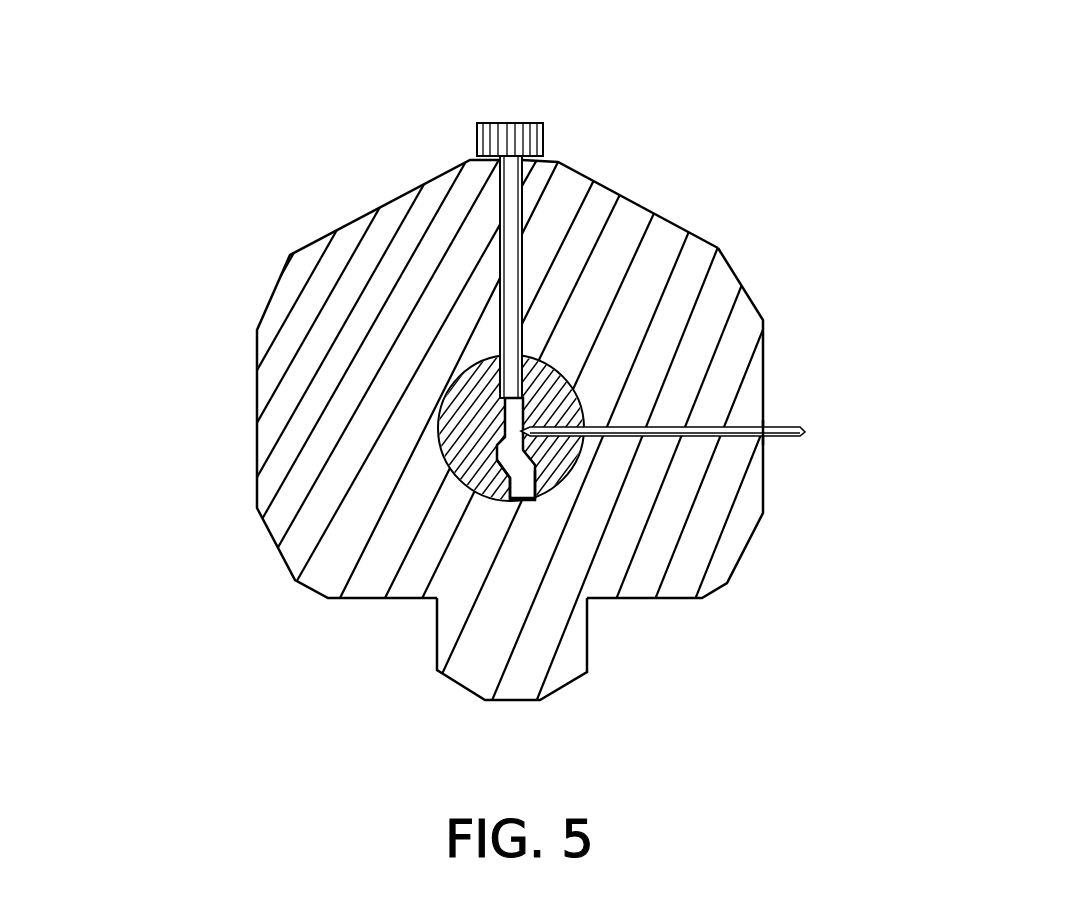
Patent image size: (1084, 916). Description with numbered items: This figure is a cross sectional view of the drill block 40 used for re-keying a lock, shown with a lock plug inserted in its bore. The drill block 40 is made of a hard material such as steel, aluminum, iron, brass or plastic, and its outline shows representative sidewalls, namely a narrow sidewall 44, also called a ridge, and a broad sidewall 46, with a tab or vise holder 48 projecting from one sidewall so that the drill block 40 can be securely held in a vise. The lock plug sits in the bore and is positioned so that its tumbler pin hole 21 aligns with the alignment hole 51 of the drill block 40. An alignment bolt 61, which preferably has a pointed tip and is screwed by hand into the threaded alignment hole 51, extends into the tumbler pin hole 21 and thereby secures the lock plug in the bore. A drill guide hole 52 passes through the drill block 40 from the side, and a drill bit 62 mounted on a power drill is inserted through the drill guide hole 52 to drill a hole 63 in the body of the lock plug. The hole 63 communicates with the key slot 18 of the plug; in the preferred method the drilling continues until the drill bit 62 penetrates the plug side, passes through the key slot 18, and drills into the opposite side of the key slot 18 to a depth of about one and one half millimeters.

The key slot 18 is at (530, 488).
The tumbler pin hole 21 is at (540, 363).
The drill block 40 is at (258, 400).
The narrow sidewall 44 is at (552, 166).
The broad sidewall 46 is at (765, 388).
The vise holder 48 is at (437, 642).
The alignment hole 51 is at (498, 217).
The drill guide hole 52 is at (765, 440).
The alignment bolt 61 is at (493, 133).
The drill bit 62 is at (805, 433).
The hole 63 is at (577, 438).